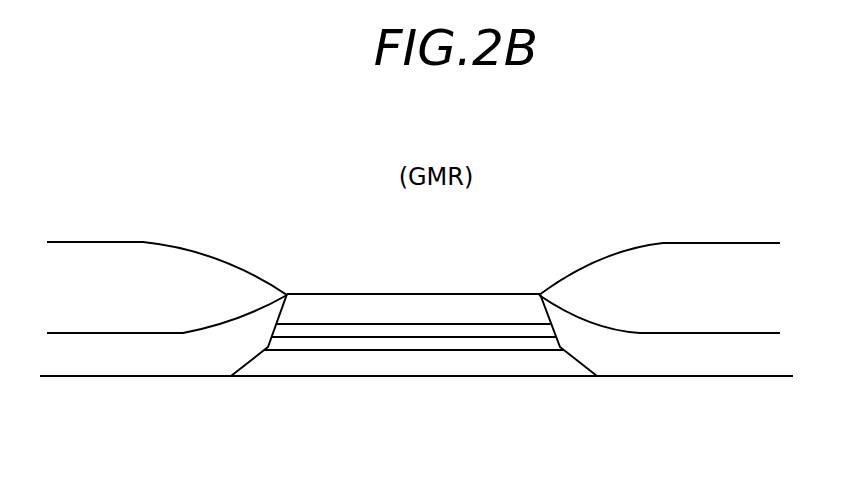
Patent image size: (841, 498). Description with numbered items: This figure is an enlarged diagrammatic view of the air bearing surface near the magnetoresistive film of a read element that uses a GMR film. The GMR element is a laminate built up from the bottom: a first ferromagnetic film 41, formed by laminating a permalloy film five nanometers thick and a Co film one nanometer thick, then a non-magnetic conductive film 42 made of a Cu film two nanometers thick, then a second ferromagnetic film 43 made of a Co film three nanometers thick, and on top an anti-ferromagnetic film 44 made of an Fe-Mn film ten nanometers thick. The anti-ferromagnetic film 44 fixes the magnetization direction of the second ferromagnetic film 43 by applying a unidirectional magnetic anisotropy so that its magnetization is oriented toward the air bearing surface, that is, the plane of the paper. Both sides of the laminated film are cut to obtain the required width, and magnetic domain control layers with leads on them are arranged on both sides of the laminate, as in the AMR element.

The first ferromagnetic film 41 is at (345, 362).
The non-magnetic conductive film 42 is at (407, 342).
The second ferromagnetic film 43 is at (467, 327).
The anti-ferromagnetic film 44 is at (417, 317).